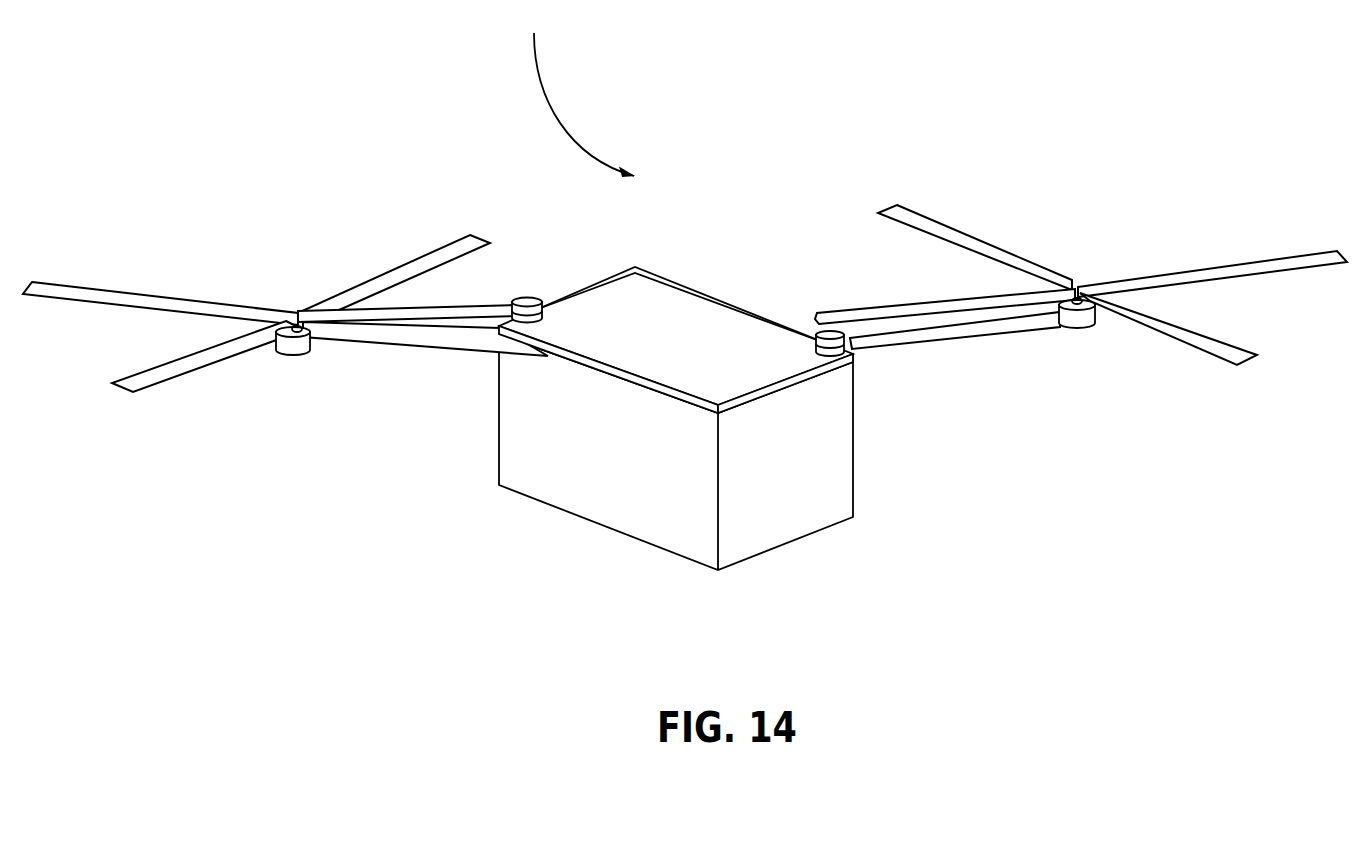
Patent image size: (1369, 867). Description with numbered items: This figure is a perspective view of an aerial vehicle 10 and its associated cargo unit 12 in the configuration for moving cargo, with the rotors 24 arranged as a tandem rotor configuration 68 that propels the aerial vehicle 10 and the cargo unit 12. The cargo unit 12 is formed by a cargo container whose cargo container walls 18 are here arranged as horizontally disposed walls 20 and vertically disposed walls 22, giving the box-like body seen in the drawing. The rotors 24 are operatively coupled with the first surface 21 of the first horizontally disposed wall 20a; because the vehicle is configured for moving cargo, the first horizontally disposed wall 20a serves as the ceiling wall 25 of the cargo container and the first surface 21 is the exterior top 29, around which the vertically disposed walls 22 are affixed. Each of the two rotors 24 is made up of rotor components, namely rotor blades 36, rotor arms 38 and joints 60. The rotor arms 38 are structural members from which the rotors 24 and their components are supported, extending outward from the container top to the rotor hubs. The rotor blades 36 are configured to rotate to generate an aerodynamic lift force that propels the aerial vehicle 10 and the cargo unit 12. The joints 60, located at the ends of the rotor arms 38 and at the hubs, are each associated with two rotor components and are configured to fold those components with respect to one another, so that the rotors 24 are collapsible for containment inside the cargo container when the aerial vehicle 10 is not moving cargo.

The aerial vehicle 10 is at (685, 345).
The cargo unit 12 is at (832, 180).
The cargo container walls 18 is at (761, 404).
The horizontally disposed walls 20 is at (670, 300).
The first surface 21 is at (780, 401).
The exterior top 29 is at (763, 353).
The first horizontally disposed wall 20a is at (760, 421).
The ceiling wall 25 is at (747, 370).
The vertically disposed walls 22 is at (608, 488).
The rotors 24 is at (918, 318).
The rotor blades 36 is at (182, 308).
The rotor arms 38 is at (461, 316).
The joints 60 is at (300, 327).
The tandem rotor configuration 68 is at (578, 95).